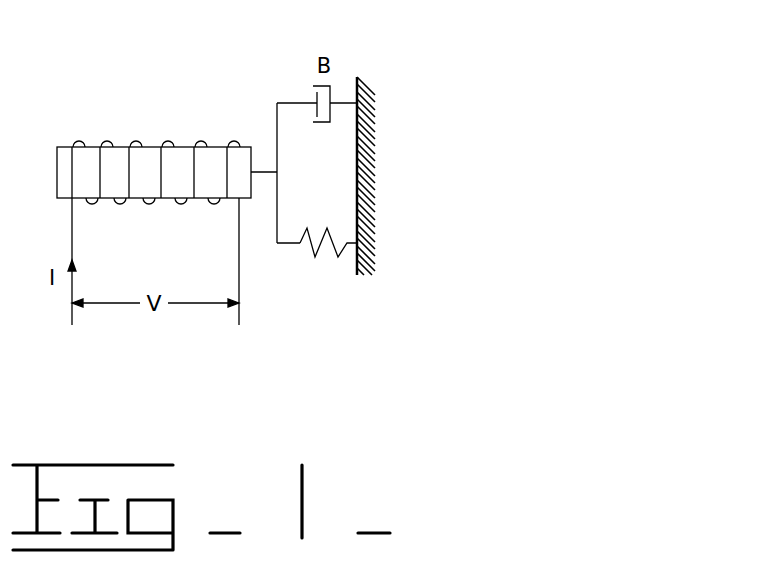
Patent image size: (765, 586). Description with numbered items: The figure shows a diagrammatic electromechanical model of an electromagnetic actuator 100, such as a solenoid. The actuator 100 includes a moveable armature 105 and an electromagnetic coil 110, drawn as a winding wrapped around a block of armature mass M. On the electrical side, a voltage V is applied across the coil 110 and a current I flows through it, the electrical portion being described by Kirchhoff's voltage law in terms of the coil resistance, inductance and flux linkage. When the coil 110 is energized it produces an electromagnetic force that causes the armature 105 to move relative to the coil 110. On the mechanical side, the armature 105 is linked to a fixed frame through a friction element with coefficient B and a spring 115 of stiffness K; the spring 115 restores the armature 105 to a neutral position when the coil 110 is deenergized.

The electromagnetic actuator 100 is at (387, 62).
The moveable armature 105 is at (250, 140).
The electromagnetic coil 110 is at (107, 143).
The spring 115 is at (313, 302).